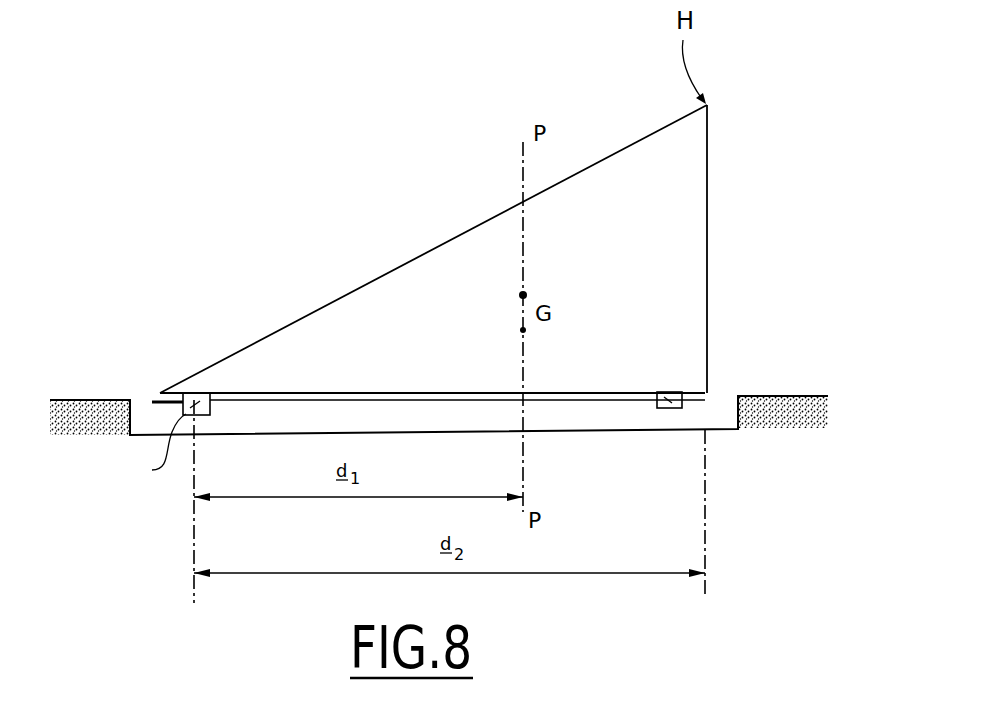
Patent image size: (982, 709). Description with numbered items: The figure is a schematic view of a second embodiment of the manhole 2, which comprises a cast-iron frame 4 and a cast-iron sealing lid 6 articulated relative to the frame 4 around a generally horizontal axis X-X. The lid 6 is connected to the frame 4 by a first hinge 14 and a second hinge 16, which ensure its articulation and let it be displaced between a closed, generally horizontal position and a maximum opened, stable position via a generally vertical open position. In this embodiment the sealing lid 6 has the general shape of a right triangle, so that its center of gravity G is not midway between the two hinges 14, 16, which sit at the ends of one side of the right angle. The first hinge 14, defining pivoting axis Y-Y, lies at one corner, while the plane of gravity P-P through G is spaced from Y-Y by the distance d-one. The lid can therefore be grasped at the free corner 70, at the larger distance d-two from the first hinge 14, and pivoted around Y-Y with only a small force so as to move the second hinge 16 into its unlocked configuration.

The manhole 2 is at (810, 149).
The frame 4 is at (712, 431).
The sealing lid 6 is at (686, 281).
The first hinge 14 is at (192, 392).
The second hinge 16 is at (662, 392).
The free corner 70 is at (718, 103).